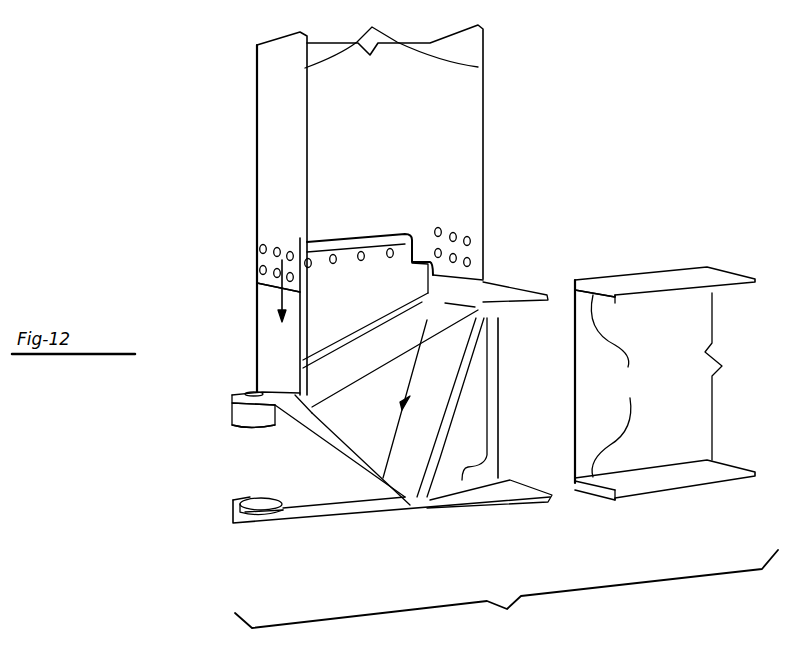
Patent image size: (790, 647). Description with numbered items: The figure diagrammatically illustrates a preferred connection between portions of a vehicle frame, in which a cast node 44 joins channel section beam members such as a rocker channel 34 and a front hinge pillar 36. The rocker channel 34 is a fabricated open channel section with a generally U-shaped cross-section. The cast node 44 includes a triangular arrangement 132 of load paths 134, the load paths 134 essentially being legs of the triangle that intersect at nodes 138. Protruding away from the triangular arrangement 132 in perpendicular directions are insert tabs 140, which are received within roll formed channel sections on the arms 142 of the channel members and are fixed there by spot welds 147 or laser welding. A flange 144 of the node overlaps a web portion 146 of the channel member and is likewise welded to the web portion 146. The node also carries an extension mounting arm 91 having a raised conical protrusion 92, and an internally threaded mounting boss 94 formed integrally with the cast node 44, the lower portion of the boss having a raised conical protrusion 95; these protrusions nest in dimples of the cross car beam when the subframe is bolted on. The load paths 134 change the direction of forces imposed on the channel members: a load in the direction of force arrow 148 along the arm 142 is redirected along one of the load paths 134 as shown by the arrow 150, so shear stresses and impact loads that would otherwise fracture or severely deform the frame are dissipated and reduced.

The rocker channel 34 is at (645, 279).
The front hinge pillar 36 is at (485, 153).
The cast node 44 is at (384, 516).
The extension mounting arm 91 is at (250, 514).
The raised conical protrusion 92 is at (240, 505).
The threaded mounting boss 94 is at (232, 403).
The raised conical protrusion 95 is at (262, 430).
The triangular arrangement 132 is at (440, 378).
The load path 134 is at (447, 418).
The node 138 is at (310, 395).
The insert tab 140 is at (515, 290).
The arm 142 is at (513, 241).
The flange 144 is at (515, 446).
The web portion 146 is at (372, 137).
The spot weld 147 is at (435, 231).
The force arrow 148 is at (257, 290).
The arrow 150 is at (317, 413).